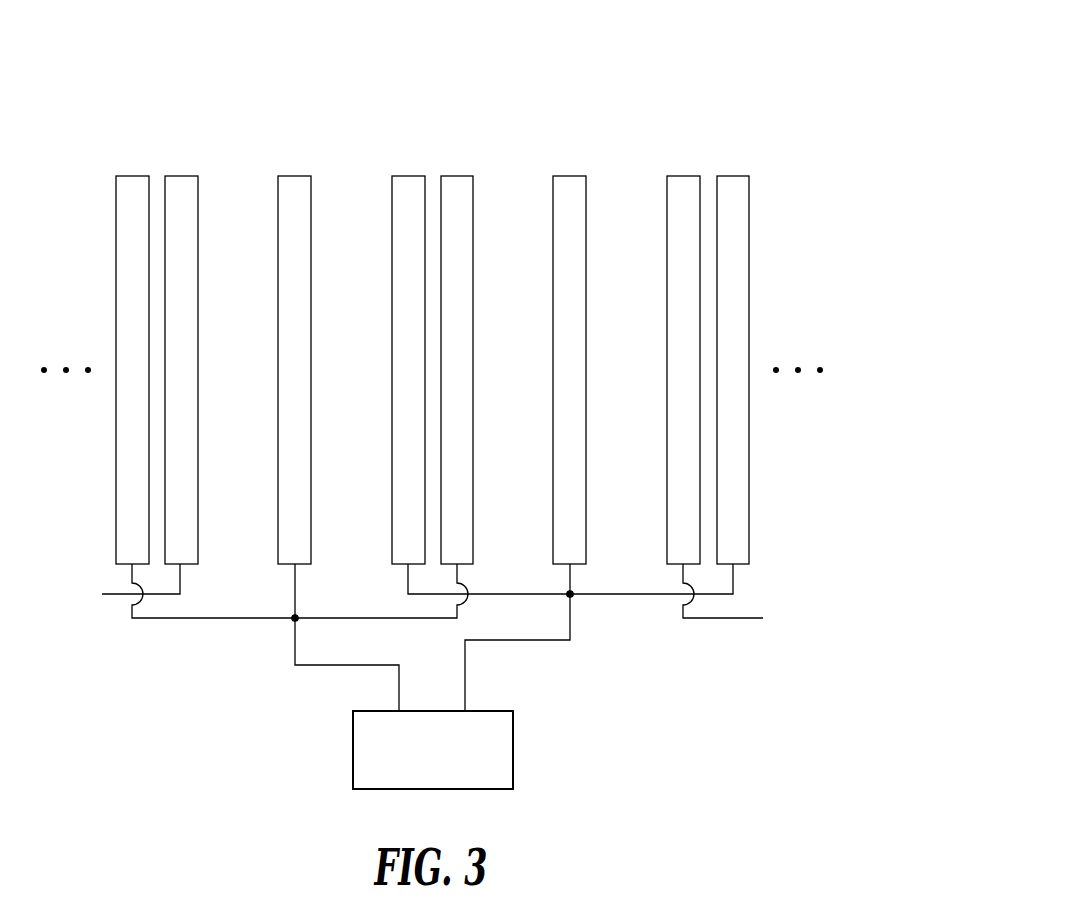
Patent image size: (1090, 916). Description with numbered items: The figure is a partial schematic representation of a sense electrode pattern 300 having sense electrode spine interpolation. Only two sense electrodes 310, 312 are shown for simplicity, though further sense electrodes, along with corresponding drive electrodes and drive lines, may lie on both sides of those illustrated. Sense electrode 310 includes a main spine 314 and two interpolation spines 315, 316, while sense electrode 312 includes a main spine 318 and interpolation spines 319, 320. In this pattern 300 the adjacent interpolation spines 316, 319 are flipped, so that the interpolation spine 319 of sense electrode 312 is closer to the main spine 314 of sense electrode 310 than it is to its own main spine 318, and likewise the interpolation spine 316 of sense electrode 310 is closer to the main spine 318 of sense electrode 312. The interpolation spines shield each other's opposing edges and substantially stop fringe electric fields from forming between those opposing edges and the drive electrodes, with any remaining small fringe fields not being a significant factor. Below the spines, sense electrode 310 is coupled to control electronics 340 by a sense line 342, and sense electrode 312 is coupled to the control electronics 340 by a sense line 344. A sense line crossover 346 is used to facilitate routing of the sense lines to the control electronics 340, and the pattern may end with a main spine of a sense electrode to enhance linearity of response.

The sense electrode pattern 300 is at (686, 63).
The sense electrode 310 is at (117, 150).
The sense electrode 312 is at (748, 150).
The main spine 314 is at (311, 331).
The interpolation spine 315 is at (116, 322).
The interpolation spine 316 is at (473, 369).
The main spine 318 is at (586, 331).
The interpolation spine 319 is at (392, 371).
The interpolation spine 320 is at (749, 323).
The control electronics 340 is at (485, 711).
The sense line 342 is at (295, 645).
The sense line 344 is at (572, 624).
The sense line crossover 346 is at (462, 590).